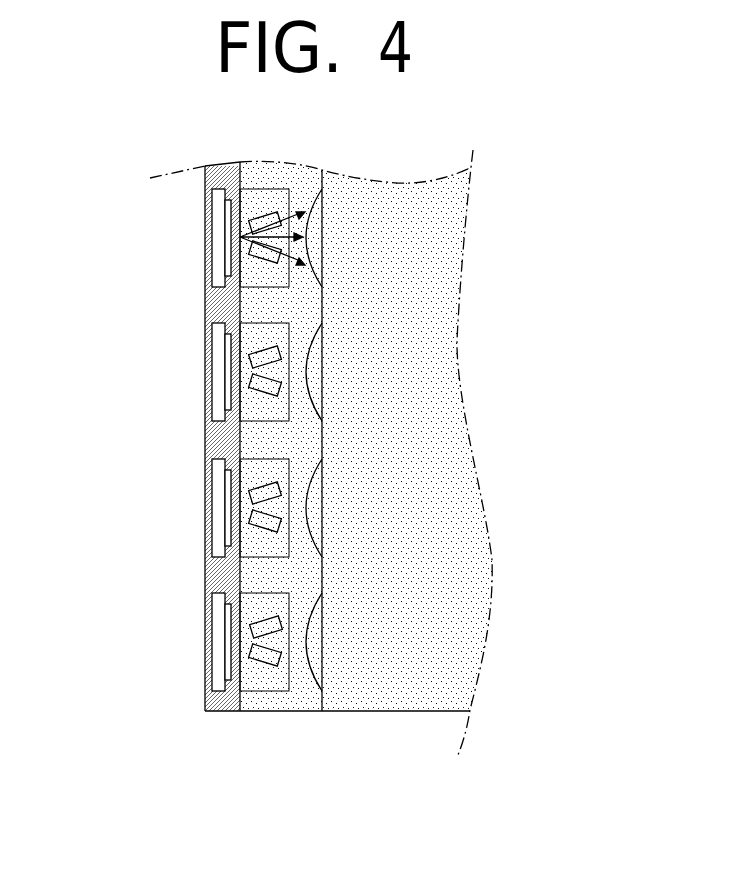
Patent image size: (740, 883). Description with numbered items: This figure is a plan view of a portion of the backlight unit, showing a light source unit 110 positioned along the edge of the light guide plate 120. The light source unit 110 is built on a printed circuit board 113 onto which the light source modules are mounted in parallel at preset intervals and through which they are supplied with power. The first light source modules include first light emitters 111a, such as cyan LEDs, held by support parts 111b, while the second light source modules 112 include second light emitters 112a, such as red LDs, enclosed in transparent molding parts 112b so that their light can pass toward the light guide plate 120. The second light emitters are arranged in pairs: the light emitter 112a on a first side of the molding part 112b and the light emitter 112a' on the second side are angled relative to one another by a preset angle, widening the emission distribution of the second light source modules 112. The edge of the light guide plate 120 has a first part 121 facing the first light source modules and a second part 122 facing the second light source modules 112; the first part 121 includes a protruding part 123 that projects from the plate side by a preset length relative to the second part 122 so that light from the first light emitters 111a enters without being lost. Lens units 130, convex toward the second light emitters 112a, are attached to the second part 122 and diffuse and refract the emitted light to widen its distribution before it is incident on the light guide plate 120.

The light source unit 110 is at (199, 511).
The first light emitter 111a is at (233, 693).
The support part 111b is at (213, 692).
The second light source module 112 is at (165, 440).
The second light emitter 112a is at (200, 439).
The second light emitter 112a' is at (179, 440).
The molding part 112b is at (250, 603).
The printed circuit board 113 is at (215, 443).
The light guide plate 120 is at (455, 463).
The first part 121 is at (247, 700).
The second part 122 is at (298, 705).
The protruding part 123 is at (325, 705).
The lens unit 130 is at (313, 640).